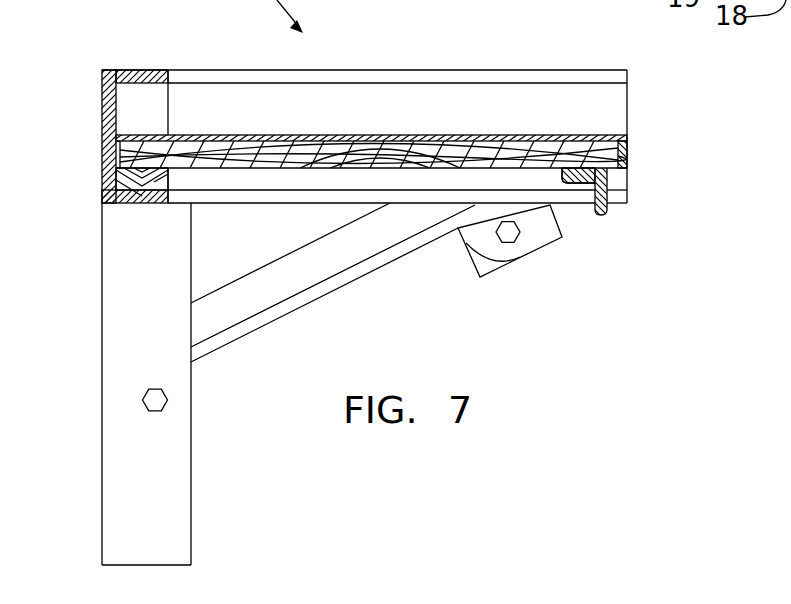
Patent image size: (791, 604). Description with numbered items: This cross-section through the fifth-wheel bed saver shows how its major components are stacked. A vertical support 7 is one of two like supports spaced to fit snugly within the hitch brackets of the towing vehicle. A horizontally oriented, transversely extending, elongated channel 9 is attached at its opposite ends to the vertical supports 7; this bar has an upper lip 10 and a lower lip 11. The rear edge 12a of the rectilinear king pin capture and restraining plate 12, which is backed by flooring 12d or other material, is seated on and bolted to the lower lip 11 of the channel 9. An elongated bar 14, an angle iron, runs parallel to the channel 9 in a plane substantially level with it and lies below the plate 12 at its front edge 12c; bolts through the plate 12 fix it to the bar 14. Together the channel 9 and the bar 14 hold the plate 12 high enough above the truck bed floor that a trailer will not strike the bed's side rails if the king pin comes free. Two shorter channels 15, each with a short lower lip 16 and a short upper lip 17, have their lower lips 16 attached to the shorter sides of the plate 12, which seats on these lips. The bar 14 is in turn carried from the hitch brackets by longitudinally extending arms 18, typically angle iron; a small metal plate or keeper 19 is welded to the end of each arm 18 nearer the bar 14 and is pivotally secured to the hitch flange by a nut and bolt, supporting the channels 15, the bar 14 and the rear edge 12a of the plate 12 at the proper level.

The vertical support 7 is at (167, 478).
The elongated channel 9 is at (101, 108).
The upper lip 10 is at (163, 70).
The lower lip 11 is at (117, 205).
The king pin capture and restraining plate 12 is at (582, 128).
The rear edge 12a is at (114, 150).
The front edge 12c is at (620, 163).
The flooring 12d is at (270, 168).
The elongated bar 14 is at (608, 212).
The shorter bar or channel 15 is at (543, 122).
The short lower lip 16 is at (272, 203).
The short upper lip 17 is at (322, 70).
The longitudinally extending arm 18 is at (348, 277).
The keeper 19 is at (518, 259).